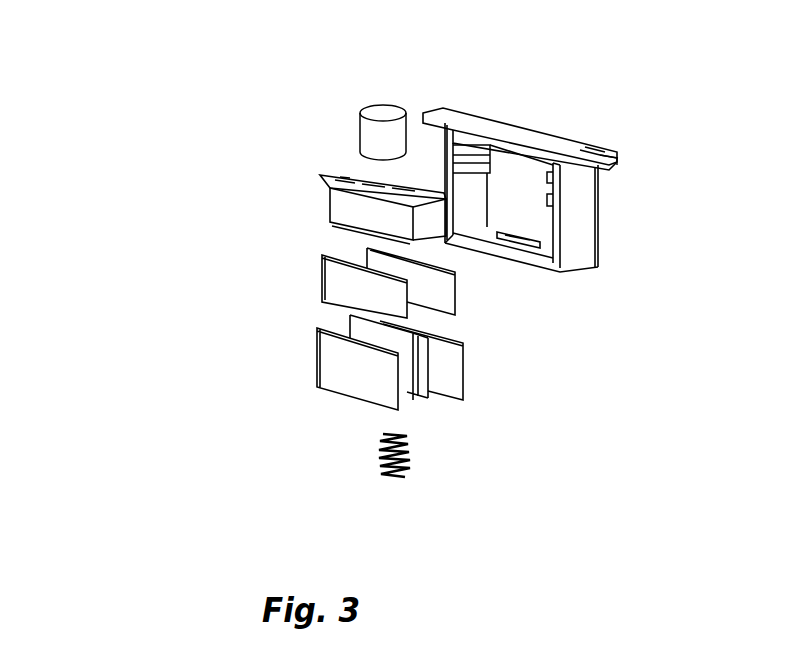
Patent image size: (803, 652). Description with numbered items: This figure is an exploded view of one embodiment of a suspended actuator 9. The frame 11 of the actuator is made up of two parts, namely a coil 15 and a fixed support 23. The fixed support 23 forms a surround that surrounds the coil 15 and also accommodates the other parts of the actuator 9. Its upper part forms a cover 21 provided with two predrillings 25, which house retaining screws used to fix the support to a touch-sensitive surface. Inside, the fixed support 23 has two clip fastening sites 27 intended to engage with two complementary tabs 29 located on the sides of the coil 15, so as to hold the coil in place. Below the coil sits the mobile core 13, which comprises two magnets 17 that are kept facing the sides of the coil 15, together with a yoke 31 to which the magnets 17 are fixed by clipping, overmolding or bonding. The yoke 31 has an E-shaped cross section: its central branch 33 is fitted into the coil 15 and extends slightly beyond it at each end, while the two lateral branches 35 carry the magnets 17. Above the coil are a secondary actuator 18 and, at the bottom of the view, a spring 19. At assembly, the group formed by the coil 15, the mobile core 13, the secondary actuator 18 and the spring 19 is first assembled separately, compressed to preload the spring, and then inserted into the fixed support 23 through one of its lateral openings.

The suspended actuator 9 is at (81, 84).
The frame 11 is at (175, 131).
The mobile core 13 is at (690, 320).
The coil 15 is at (300, 195).
The magnets 17 is at (492, 299).
The secondary actuator 18 is at (417, 92).
The spring 19 is at (416, 502).
The cover 21 is at (547, 130).
The fixed support 23 is at (412, 160).
The predrillings 25 is at (615, 155).
The clip fastening sites 27 is at (497, 158).
The tabs 29 is at (302, 204).
The yoke 31 is at (620, 368).
The central branch 33 is at (446, 406).
The lateral branches 35 is at (427, 373).